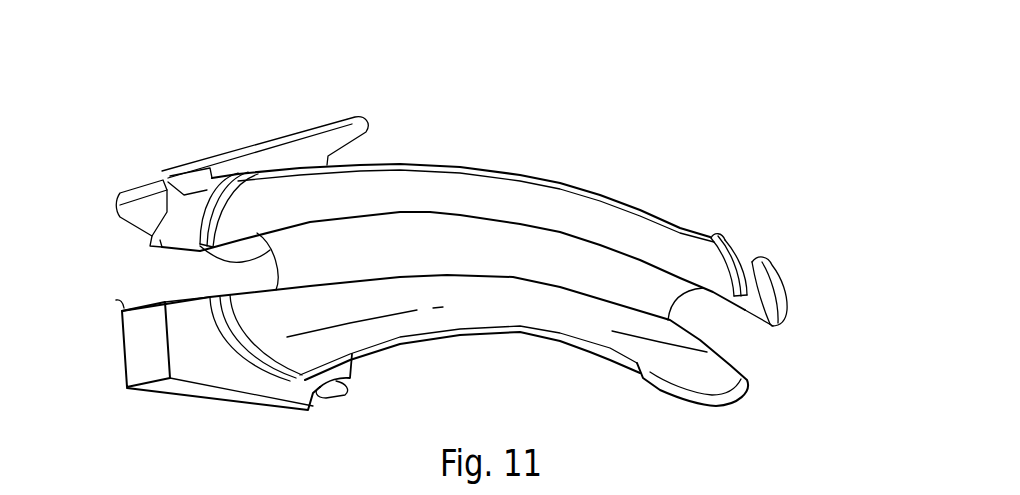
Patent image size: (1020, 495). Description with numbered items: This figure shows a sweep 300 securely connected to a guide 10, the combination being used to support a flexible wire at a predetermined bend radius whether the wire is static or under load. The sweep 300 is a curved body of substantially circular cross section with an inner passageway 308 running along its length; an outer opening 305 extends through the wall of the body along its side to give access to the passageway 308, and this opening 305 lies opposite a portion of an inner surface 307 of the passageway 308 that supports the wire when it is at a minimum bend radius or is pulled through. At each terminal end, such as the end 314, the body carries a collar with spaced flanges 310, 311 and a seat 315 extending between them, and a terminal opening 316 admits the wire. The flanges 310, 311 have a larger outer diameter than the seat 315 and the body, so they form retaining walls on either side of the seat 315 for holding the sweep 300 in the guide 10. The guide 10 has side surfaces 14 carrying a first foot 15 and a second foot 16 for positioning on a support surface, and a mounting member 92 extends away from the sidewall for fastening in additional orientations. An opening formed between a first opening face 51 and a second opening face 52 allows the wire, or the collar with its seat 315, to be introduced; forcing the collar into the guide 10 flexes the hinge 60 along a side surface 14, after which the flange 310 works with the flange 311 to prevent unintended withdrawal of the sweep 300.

The guide 10 is at (268, 118).
The side surfaces 14 is at (133, 340).
The first foot 15 is at (243, 158).
The second foot 16 is at (217, 398).
The first opening face 51 is at (118, 223).
The second opening face 52 is at (116, 300).
The hinge 60 is at (330, 391).
The mounting member 92 is at (362, 118).
The sweep 300 is at (620, 182).
The outer opening 305 is at (748, 338).
The inner surface 307 is at (462, 228).
The inner passageway 308 is at (403, 213).
The first flange 310 is at (772, 265).
The second flange 311 is at (279, 262).
The terminal end 314 is at (787, 316).
The seat 315 is at (751, 258).
The terminal opening 316 is at (233, 298).